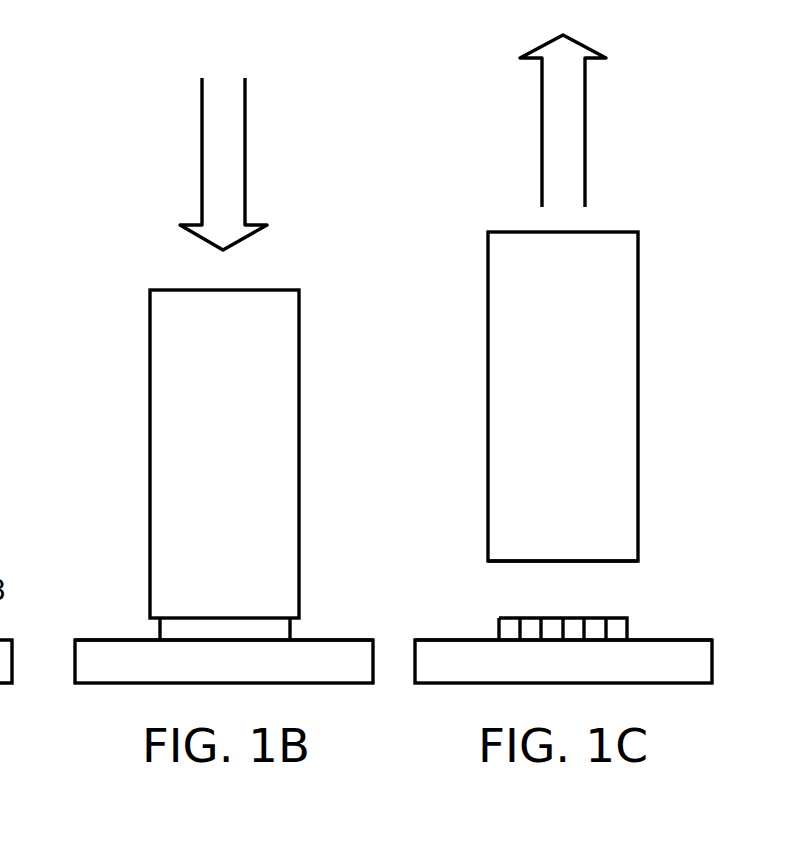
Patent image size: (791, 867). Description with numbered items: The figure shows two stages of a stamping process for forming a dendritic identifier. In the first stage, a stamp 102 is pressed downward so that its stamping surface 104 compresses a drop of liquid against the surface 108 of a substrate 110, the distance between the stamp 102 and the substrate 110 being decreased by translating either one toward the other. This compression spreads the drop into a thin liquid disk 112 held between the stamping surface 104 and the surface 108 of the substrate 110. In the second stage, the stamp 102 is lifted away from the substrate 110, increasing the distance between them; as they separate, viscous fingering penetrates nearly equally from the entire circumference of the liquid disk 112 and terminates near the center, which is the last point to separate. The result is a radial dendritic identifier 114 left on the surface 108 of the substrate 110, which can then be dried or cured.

In FIG. 1B, the stamp 102 is at (241, 442).
In FIG. 1C, the stamp 102 is at (591, 431).
In FIG. 1C, the stamping surface 104 is at (522, 562).
In FIG. 1B, the surface of the substrate 108 is at (318, 640).
In FIG. 1C, the surface of the substrate 108 is at (700, 640).
In FIG. 1B, the substrate 110 is at (348, 676).
In FIG. 1C, the substrate 110 is at (686, 676).
In FIG. 1B, the liquid disk 112 is at (147, 633).
In FIG. 1C, the dendritic identifier 114 is at (628, 630).